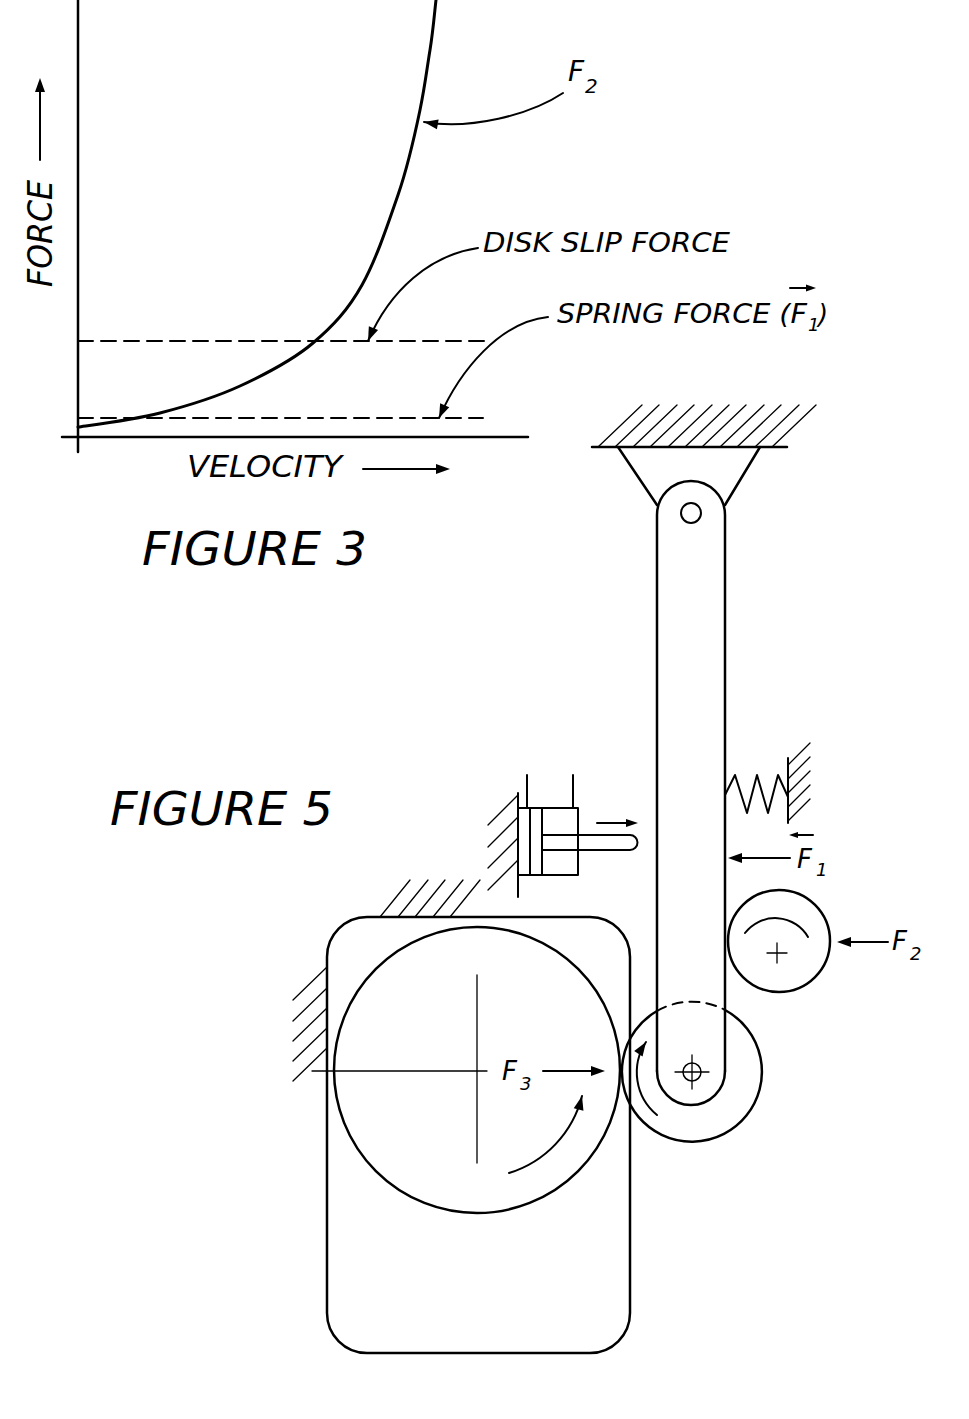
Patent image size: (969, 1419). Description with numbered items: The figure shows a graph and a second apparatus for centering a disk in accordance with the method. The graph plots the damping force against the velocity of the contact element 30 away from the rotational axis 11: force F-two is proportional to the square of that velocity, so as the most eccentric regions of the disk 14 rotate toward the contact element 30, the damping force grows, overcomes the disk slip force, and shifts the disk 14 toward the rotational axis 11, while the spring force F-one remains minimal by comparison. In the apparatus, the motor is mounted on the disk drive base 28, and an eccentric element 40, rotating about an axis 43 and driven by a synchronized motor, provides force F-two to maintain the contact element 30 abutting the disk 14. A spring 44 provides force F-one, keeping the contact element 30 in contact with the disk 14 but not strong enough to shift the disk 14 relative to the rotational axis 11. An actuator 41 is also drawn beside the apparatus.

The rotational axis 11 is at (473, 1076).
The disk 14 is at (590, 1130).
The disk drive base 28 is at (630, 1260).
The contact element 30 is at (735, 1094).
The eccentric element 40 is at (817, 913).
The piston actuator 41 is at (553, 805).
The axis 43 is at (780, 957).
The spring 44 is at (773, 742).